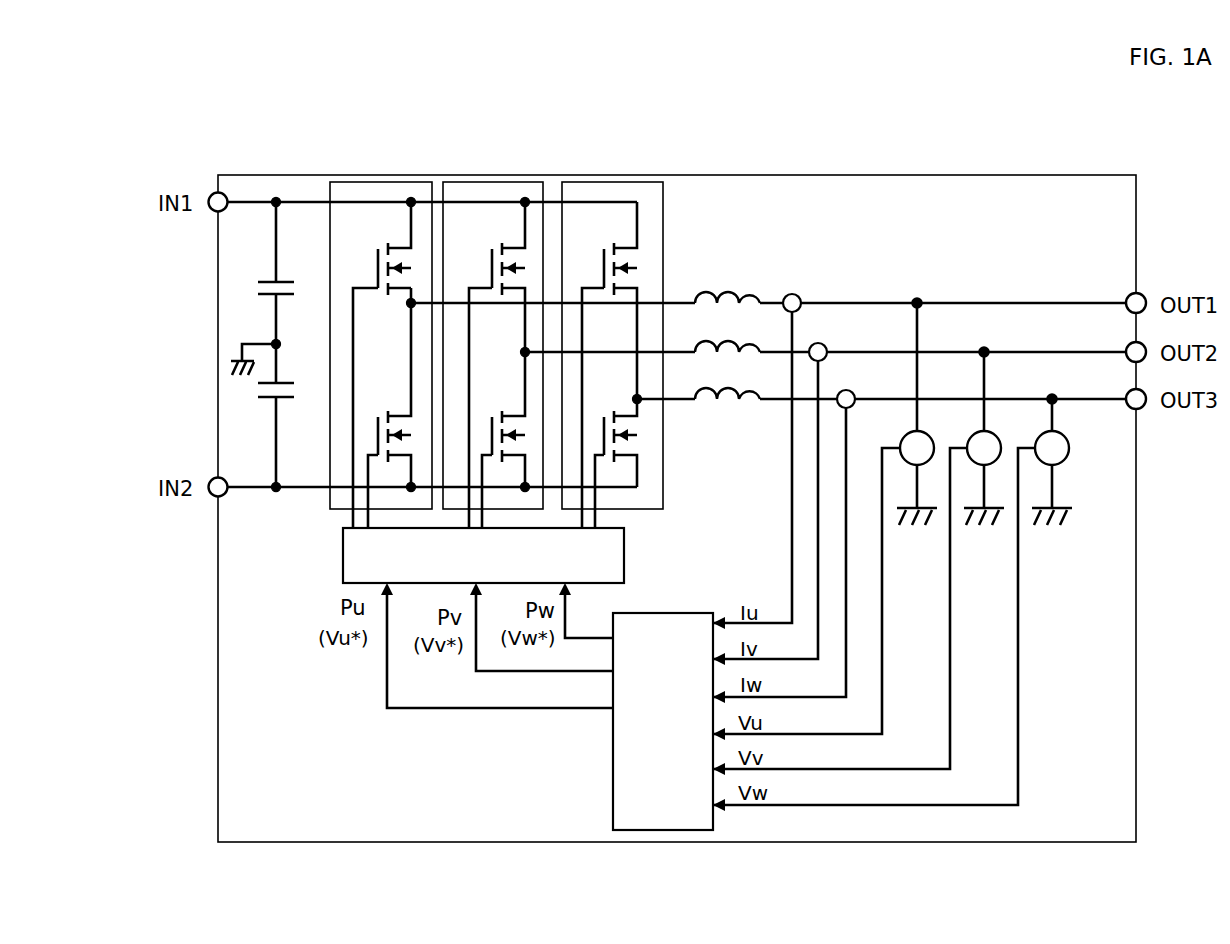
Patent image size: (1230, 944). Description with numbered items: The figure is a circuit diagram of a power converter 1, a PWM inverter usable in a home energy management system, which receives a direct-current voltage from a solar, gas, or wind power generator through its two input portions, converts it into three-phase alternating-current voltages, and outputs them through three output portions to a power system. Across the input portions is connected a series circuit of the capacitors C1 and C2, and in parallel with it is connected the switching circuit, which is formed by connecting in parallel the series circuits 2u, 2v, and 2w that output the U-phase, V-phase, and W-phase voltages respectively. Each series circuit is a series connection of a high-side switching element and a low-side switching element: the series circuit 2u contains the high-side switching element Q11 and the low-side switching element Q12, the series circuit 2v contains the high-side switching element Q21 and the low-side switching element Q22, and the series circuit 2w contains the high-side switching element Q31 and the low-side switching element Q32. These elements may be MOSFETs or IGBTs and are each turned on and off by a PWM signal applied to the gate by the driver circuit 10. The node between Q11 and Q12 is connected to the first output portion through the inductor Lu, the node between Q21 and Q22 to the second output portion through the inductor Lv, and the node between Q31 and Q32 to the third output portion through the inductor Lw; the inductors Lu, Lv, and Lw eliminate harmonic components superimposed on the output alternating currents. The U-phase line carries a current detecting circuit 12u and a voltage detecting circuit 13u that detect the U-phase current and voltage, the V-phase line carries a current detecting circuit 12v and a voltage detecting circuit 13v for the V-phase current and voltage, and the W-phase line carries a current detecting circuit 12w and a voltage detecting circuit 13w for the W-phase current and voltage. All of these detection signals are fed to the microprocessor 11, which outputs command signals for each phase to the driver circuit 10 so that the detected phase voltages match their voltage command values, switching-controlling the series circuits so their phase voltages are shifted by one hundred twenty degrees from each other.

The power converter 1 is at (218, 174).
The series circuit 2u is at (350, 181).
The series circuit 2v is at (473, 181).
The series circuit 2w is at (592, 181).
The driver circuit 10 is at (343, 556).
The microprocessor 11 is at (700, 613).
The current detecting circuit 12u is at (764, 451).
The current detecting circuit 12v is at (782, 492).
The current detecting circuit 12w is at (798, 534).
The voltage detecting circuit 13u is at (825, 520).
The voltage detecting circuit 13v is at (858, 562).
The voltage detecting circuit 13w is at (892, 603).
The capacitor C1 is at (284, 275).
The capacitor C2 is at (284, 377).
The high-side switching element Q11 is at (382, 365).
The low-side switching element Q12 is at (385, 415).
The high-side switching element Q21 is at (497, 365).
The low-side switching element Q22 is at (500, 440).
The high-side switching element Q31 is at (609, 365).
The low-side switching element Q32 is at (611, 454).
The inductor Lu is at (727, 282).
The inductor Lv is at (727, 331).
The inductor Lw is at (727, 378).